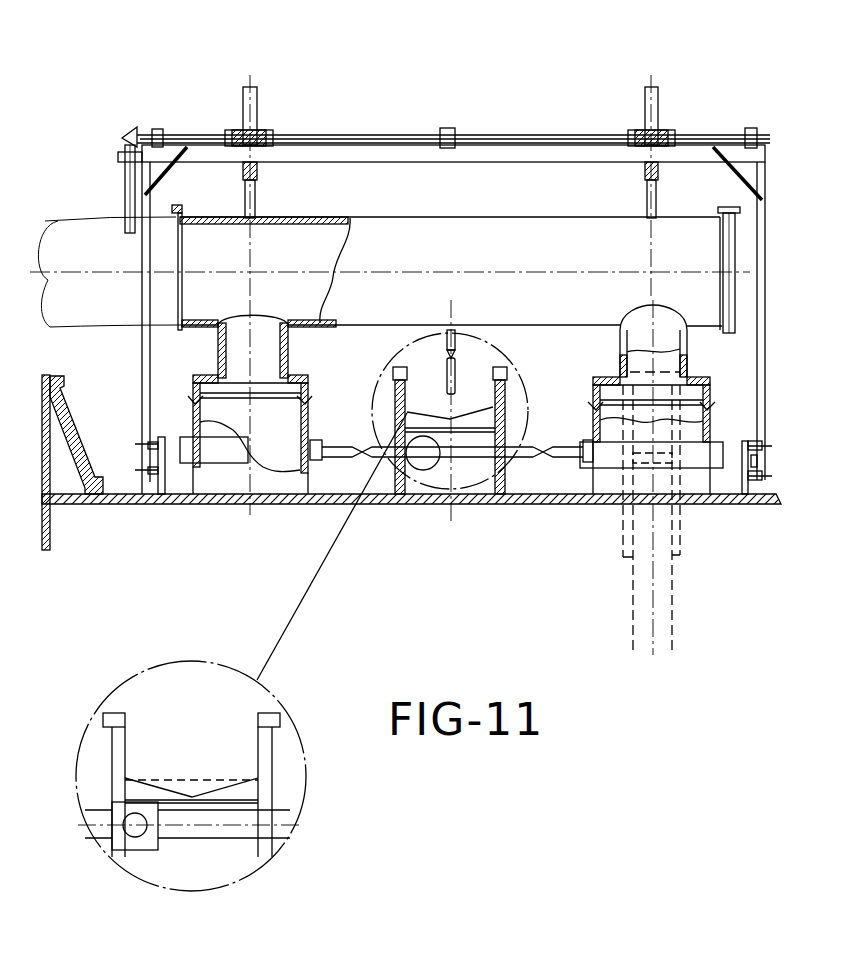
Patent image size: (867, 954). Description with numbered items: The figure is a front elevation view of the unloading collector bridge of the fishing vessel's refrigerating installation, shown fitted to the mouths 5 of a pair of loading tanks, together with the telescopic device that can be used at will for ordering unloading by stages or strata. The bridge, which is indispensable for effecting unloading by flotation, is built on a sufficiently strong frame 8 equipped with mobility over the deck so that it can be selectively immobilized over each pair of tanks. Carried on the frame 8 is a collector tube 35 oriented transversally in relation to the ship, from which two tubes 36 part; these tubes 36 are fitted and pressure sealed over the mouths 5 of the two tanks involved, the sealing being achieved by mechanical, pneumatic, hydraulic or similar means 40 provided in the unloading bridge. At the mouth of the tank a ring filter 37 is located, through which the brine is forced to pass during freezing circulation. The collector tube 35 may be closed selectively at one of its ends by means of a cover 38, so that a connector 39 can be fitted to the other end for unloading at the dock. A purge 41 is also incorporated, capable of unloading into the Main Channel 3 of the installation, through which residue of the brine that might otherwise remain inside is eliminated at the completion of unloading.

The Main Channel 3 is at (474, 420).
The mouths of loading tanks 5 is at (228, 478).
The frame 8 is at (318, 152).
The collector tube 35 is at (383, 230).
The tubes 36 is at (633, 342).
The ring filter 37 is at (193, 447).
The cover 38 is at (725, 213).
The connector 39 is at (82, 213).
The mechanical, pneumatic or hydraulic means 40 is at (255, 133).
The purge 41 is at (387, 500).